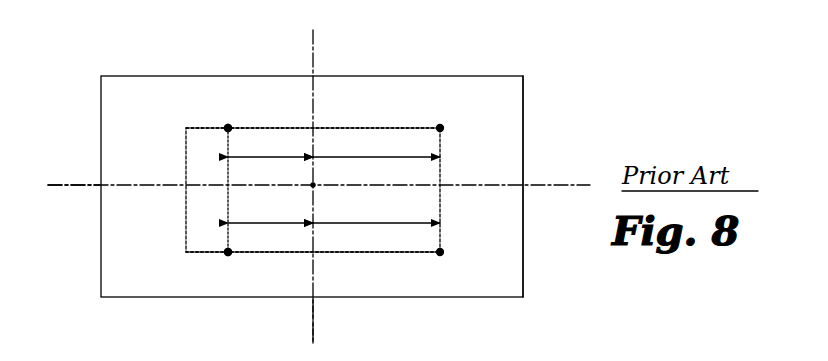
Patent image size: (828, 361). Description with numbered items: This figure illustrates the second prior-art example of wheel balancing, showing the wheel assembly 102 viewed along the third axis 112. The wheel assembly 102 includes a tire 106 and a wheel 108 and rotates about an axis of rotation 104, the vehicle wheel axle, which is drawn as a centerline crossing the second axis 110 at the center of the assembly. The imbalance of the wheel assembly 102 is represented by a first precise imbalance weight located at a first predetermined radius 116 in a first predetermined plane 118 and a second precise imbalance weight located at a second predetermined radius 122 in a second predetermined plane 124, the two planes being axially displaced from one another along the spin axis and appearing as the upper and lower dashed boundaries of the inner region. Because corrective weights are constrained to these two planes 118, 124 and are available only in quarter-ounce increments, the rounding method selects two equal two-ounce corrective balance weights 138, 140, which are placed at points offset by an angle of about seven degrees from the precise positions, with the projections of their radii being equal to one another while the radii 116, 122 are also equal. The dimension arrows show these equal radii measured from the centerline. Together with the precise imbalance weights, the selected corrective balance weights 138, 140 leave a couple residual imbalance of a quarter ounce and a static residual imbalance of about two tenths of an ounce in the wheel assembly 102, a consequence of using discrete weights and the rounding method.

The wheel assembly 102 is at (556, 99).
The axis of rotation 104 is at (312, 323).
The tire 106 is at (524, 250).
The wheel 108 is at (442, 172).
The second axis 110 is at (49, 184).
The third axis 112 is at (315, 187).
The first predetermined radius 116 is at (363, 157).
The first predetermined plane 118 is at (330, 128).
The second predetermined radius 122 is at (370, 225).
The second predetermined plane 124 is at (322, 252).
The selected corrective balance weight 138 is at (228, 128).
The selected corrective balance weight 140 is at (228, 252).